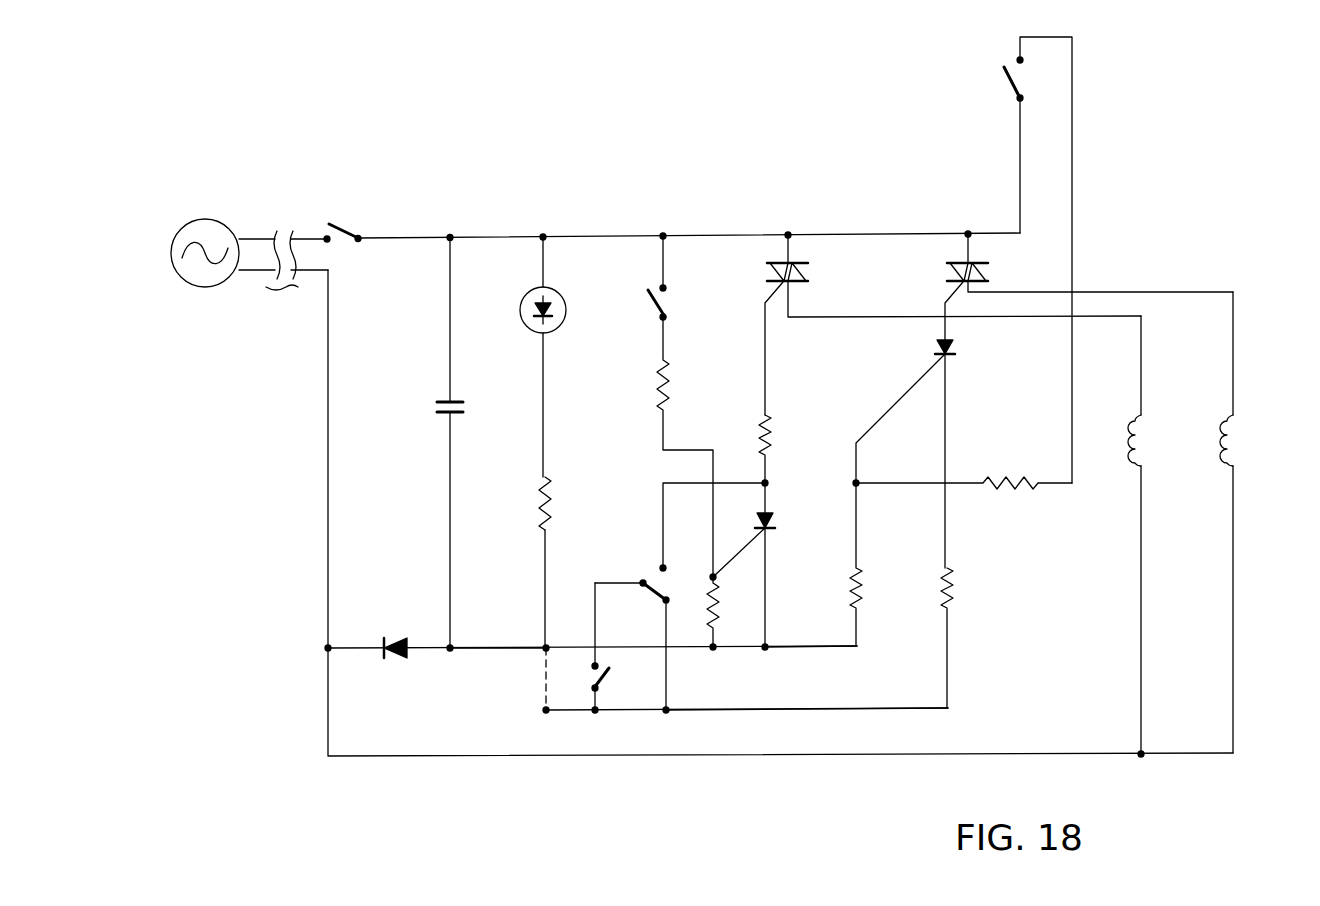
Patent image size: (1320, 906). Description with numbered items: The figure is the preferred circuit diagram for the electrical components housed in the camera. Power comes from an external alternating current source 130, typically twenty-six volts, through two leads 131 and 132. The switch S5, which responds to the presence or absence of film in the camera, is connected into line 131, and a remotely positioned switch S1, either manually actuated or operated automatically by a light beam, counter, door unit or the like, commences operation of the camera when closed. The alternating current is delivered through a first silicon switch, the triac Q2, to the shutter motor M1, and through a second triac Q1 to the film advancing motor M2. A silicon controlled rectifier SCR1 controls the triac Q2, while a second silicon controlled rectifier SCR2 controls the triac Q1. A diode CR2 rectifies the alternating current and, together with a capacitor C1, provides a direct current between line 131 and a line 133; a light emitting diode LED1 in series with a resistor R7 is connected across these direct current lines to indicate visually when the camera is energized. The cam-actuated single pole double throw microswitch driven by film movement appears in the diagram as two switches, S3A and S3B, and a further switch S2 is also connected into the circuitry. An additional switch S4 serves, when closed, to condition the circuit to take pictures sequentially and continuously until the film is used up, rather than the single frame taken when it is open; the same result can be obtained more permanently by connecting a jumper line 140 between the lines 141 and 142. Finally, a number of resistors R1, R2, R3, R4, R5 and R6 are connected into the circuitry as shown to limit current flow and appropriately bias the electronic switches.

The alternating current source 130 is at (186, 226).
The lead 131 is at (245, 238).
The lead 132 is at (252, 273).
The switch S5 is at (344, 232).
The capacitor C1 is at (462, 442).
The light emitting diode LED1 is at (560, 357).
The switch S2 is at (654, 305).
The resistor R3 is at (685, 447).
The alternating current silicon switch Q1 is at (953, 325).
The alternating current silicon switch Q2 is at (1089, 287).
The switch S1 is at (1005, 82).
The silicon controlled rectifier SCR1 is at (936, 451).
The resistor R1 is at (781, 449).
The silicon controlled rectifier SCR2 is at (772, 565).
The resistor R5 is at (729, 612).
The switch S3A is at (690, 527).
The switch S3B is at (632, 645).
The switch S4 is at (614, 646).
The resistor R7 is at (560, 562).
The diode CR2 is at (387, 662).
The line 133 is at (486, 648).
The jumper line 140 is at (540, 678).
The line 141 is at (808, 652).
The line 142 is at (840, 714).
The resistor R6 is at (872, 564).
The resistor R2 is at (964, 638).
The resistor R4 is at (964, 494).
The film advancing motor M2 is at (1157, 535).
The shutter motor M1 is at (1249, 522).